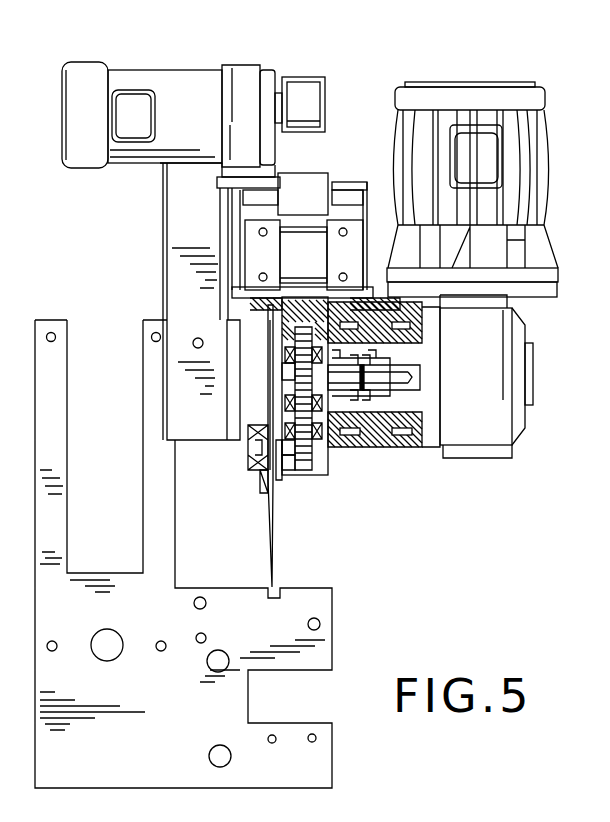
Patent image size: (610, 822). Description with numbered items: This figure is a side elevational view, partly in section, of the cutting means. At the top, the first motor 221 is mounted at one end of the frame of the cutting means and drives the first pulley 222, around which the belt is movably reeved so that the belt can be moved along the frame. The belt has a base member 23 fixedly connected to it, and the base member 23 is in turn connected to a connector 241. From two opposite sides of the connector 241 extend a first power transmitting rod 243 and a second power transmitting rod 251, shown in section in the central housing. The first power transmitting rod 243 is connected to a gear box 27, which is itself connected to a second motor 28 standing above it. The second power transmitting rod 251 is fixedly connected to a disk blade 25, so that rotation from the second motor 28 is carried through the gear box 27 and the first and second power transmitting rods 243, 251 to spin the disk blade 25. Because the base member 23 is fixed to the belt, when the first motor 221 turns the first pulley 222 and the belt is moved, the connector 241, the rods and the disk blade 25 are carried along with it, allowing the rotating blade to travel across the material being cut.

The first motor 221 is at (193, 83).
The first pulley 222 is at (302, 88).
The base member 23 is at (247, 292).
The connector 241 is at (262, 310).
The disk blade 25 is at (263, 365).
The second power transmitting rod 251 is at (285, 470).
The first power transmitting rod 243 is at (337, 457).
The gear box 27 is at (486, 387).
The second motor 28 is at (540, 165).